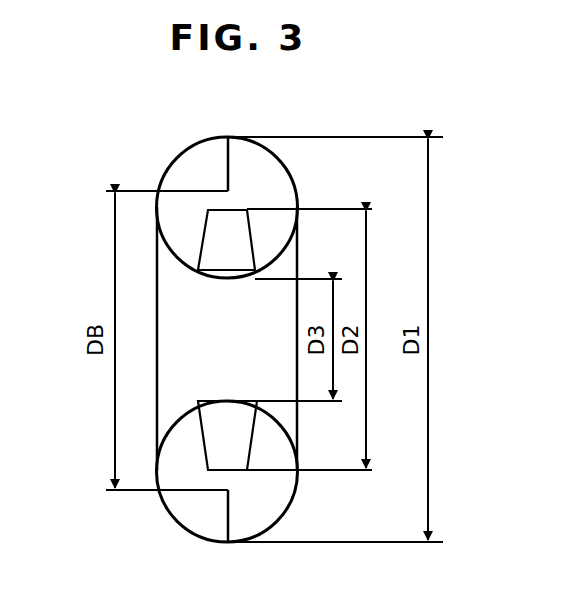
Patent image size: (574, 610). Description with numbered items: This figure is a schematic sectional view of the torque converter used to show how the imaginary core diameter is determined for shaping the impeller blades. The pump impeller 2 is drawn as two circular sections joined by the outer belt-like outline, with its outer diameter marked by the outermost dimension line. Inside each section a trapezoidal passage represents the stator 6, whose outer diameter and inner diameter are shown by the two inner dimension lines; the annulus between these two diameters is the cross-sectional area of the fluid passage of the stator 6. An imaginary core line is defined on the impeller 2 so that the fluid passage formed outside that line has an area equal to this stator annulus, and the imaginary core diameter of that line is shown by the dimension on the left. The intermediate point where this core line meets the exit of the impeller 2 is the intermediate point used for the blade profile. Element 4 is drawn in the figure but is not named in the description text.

The pump impeller 2 is at (255, 167).
The pulley 4 is at (185, 170).
The stator 6 is at (229, 265).